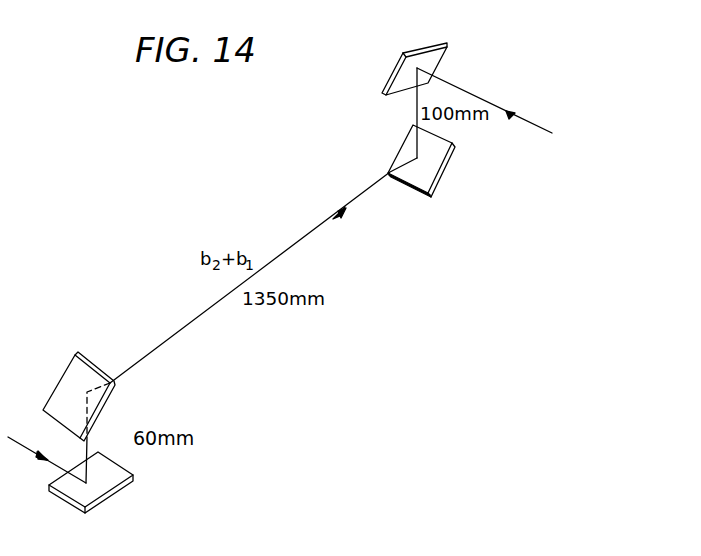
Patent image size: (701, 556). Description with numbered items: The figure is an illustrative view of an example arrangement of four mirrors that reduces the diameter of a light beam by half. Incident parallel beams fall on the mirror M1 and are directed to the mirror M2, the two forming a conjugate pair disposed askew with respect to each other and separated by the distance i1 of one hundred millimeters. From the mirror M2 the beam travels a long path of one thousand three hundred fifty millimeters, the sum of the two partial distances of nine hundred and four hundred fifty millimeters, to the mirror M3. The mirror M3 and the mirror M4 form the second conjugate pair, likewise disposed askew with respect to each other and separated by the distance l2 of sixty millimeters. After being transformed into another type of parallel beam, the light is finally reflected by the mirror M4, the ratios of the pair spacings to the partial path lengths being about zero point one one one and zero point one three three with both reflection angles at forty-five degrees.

The mirror M1 is at (414, 58).
The mirror M2 is at (432, 161).
The mirror M3 is at (77, 390).
The mirror M4 is at (91, 498).
The distance between mirrors M1 and M2 i1 is at (394, 113).
The distance between mirrors M3 and M4 l2 is at (102, 433).